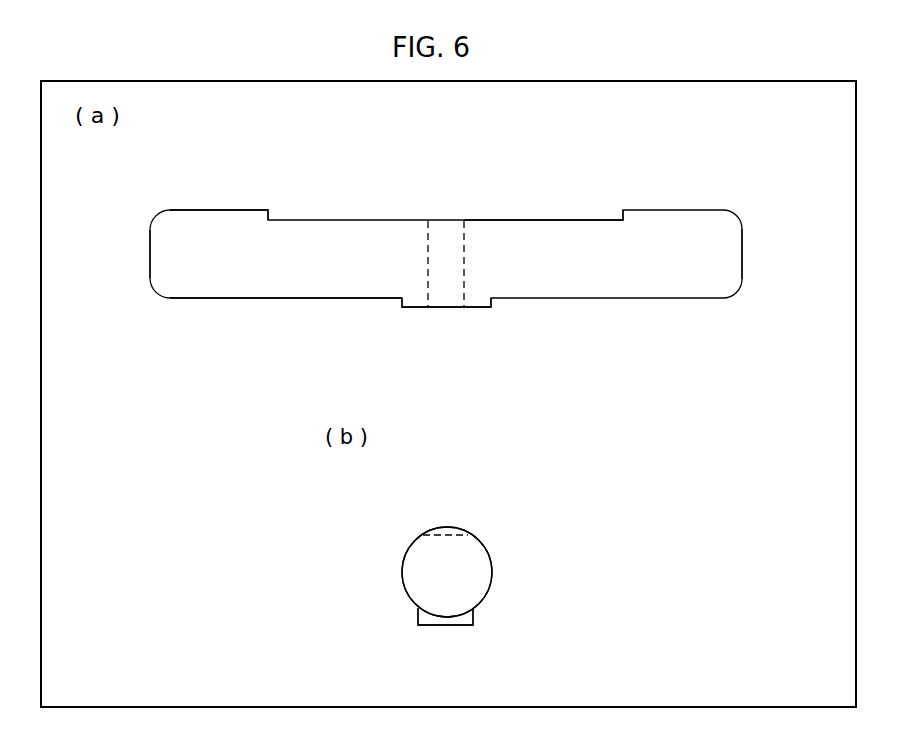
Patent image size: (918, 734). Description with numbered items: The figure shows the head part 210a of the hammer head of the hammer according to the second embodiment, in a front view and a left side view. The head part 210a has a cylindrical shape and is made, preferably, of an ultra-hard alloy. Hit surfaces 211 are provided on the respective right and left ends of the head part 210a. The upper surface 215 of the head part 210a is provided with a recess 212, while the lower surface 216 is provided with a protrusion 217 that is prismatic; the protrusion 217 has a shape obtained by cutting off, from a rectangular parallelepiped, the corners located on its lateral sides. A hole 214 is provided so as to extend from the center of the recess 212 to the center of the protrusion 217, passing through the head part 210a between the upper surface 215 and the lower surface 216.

The head part 210a is at (741, 186).
The hit surfaces 211 is at (150, 255).
The recess 212 is at (582, 220).
The hole 214 is at (429, 238).
The upper surface 215 is at (218, 210).
The lower surface 216 is at (216, 300).
The protrusion 217 is at (476, 310).